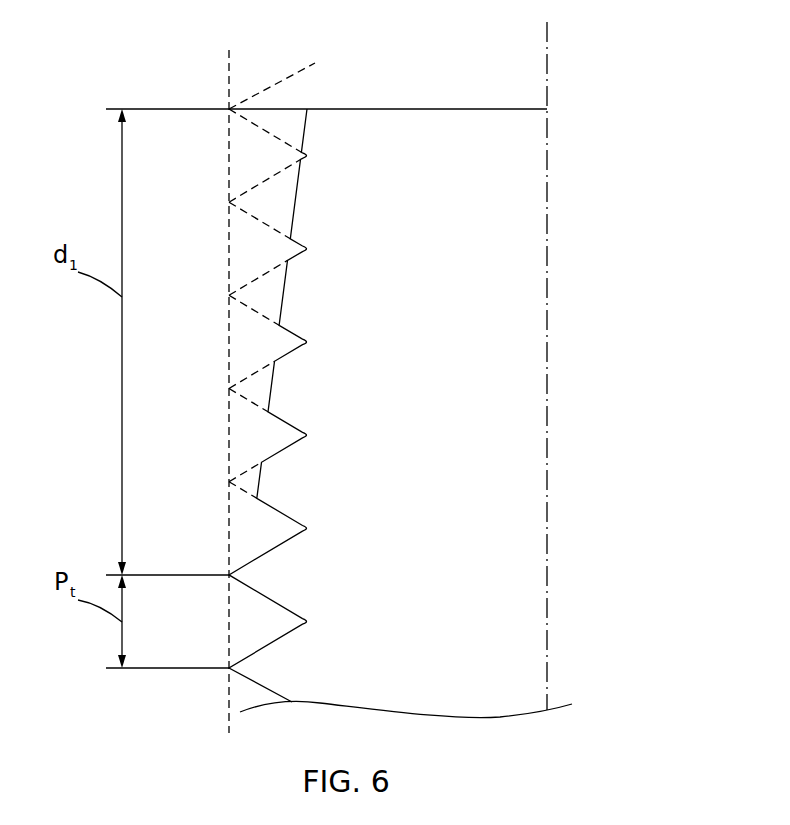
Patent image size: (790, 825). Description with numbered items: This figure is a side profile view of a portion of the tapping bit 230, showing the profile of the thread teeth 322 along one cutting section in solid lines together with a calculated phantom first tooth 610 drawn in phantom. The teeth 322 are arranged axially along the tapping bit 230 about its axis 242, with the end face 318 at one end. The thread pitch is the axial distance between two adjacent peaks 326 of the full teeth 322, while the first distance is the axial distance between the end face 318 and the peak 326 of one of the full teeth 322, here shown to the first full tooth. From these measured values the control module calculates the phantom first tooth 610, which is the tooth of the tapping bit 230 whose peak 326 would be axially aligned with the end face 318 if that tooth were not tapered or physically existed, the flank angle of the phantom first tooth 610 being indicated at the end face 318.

The phantom first tooth 610 is at (296, 73).
The end face 318 is at (436, 109).
The tapping bit 230 is at (480, 312).
The central axis 242 is at (548, 430).
The thread teeth 322 is at (270, 570).
The peaks 326 is at (229, 668).